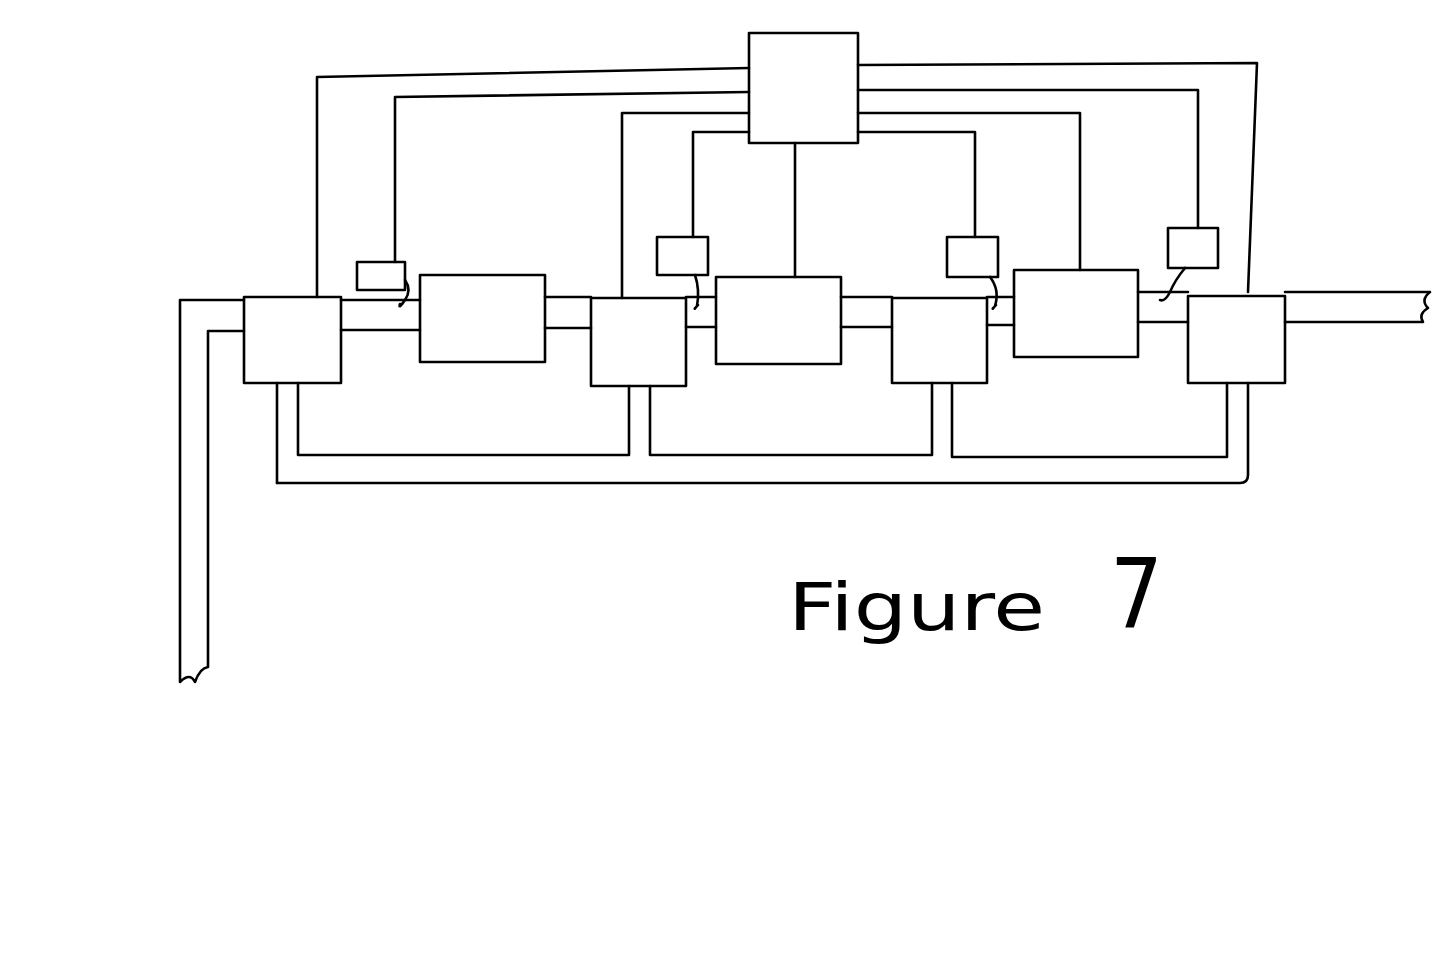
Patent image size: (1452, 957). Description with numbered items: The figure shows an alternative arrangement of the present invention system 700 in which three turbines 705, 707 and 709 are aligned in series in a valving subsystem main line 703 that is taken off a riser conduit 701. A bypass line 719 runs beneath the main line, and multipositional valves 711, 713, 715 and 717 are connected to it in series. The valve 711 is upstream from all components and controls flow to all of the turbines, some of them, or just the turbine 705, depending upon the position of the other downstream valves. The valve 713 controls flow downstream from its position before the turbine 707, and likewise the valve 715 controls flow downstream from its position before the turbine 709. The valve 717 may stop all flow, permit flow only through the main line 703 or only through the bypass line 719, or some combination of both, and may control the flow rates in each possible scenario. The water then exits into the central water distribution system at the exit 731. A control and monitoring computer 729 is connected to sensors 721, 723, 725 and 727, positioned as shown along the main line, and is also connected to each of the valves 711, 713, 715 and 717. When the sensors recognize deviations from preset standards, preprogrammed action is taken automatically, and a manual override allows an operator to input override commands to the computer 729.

The alternative arrangement system 700 is at (478, 508).
The riser conduit 701 is at (195, 638).
The valving subsystem main line 703 is at (557, 313).
The turbine 705 is at (453, 277).
The turbine 707 is at (813, 277).
The turbine 709 is at (1098, 270).
The valve 711 is at (341, 366).
The valve 713 is at (686, 370).
The valve 715 is at (987, 368).
The valve 717 is at (1285, 368).
The bypass line 719 is at (735, 480).
The sensor 721 is at (370, 262).
The sensor 723 is at (677, 237).
The sensor 725 is at (958, 233).
The sensor 727 is at (1182, 228).
The control and monitoring computer 729 is at (858, 48).
The exit 731 is at (1325, 290).